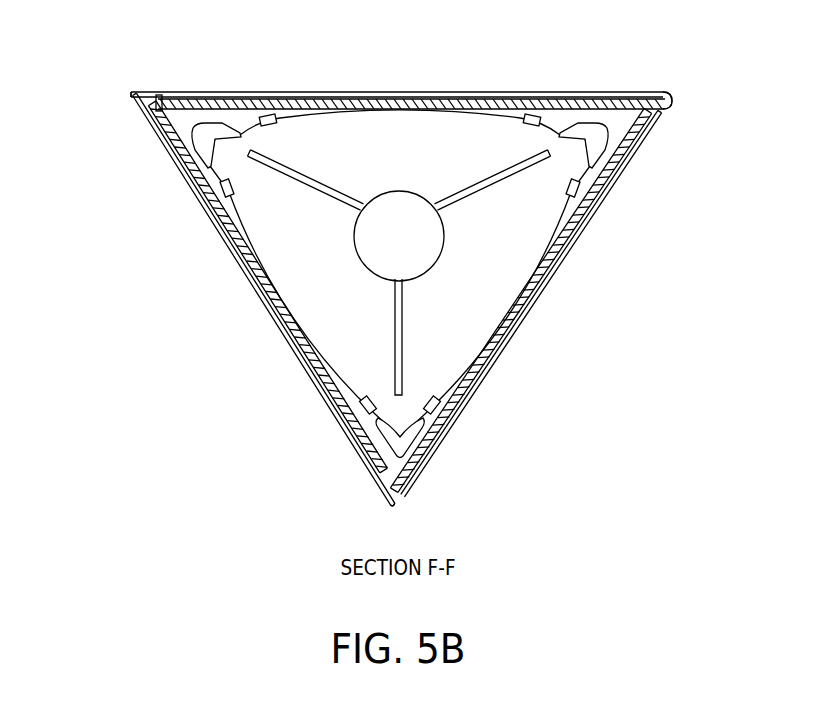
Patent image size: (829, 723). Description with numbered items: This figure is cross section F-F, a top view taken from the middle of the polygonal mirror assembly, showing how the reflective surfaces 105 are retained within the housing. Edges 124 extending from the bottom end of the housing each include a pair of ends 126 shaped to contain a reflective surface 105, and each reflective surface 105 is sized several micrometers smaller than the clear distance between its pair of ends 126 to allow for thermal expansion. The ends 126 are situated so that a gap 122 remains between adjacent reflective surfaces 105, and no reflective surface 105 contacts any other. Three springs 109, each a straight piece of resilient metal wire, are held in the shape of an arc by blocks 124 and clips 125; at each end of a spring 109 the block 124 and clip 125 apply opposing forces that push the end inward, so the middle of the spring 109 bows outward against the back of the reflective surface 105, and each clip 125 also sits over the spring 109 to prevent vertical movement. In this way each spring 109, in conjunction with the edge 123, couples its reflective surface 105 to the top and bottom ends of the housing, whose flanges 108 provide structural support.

The reflective surface 105 is at (350, 106).
The flange 108 is at (320, 185).
The spring 109 is at (332, 113).
The gap 122 is at (150, 92).
The edge 123 is at (397, 92).
The block 124 is at (218, 121).
The clip 125 is at (271, 114).
The end 126 is at (161, 96).